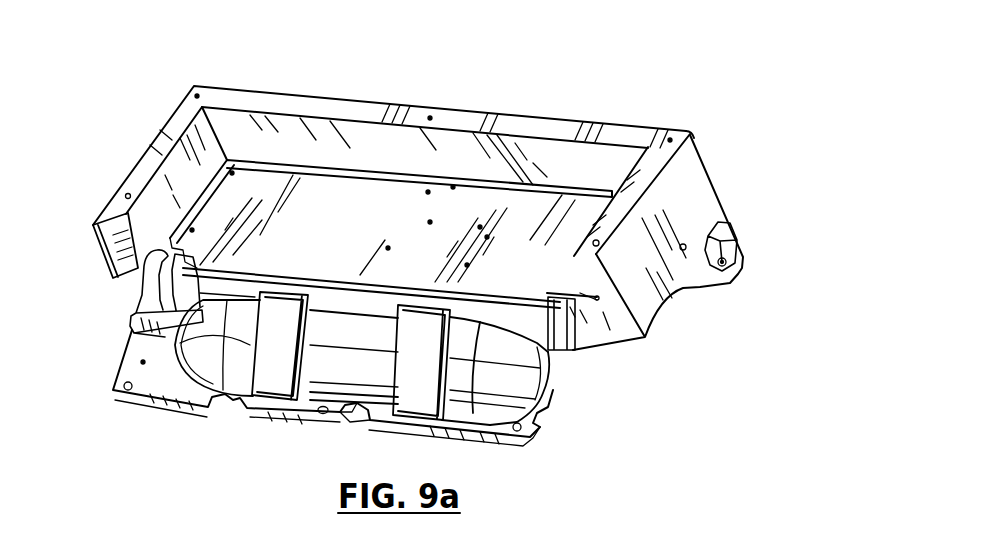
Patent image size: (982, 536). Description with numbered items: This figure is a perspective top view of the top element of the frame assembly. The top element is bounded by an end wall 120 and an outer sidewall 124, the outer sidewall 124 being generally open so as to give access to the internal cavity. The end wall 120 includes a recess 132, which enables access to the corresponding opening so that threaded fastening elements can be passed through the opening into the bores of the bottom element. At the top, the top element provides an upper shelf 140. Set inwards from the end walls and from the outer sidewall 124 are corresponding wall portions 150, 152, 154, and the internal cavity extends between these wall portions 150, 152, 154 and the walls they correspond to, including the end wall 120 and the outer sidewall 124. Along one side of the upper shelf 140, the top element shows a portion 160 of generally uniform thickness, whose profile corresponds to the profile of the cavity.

The end wall 120 is at (698, 212).
The outer sidewall 124 is at (575, 121).
The recess 132 is at (742, 243).
The upper shelf 140 is at (333, 234).
The wall portion 150 is at (607, 185).
The wall portion 152 is at (165, 193).
The wall portion 154 is at (468, 156).
The portion of generally uniform thickness 160 is at (263, 360).